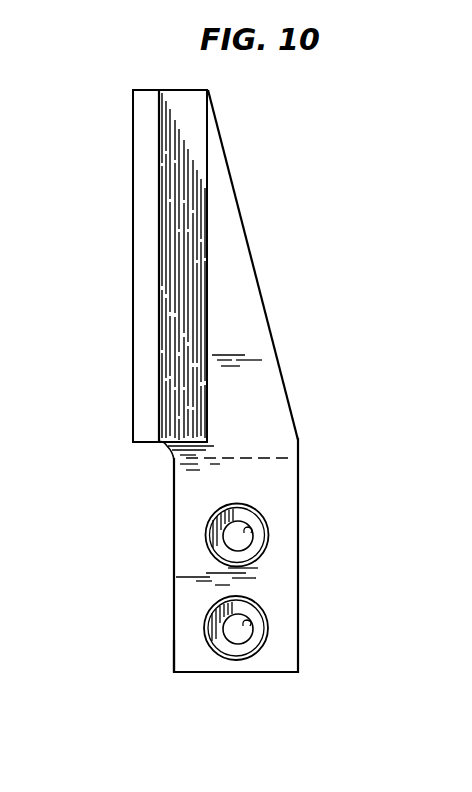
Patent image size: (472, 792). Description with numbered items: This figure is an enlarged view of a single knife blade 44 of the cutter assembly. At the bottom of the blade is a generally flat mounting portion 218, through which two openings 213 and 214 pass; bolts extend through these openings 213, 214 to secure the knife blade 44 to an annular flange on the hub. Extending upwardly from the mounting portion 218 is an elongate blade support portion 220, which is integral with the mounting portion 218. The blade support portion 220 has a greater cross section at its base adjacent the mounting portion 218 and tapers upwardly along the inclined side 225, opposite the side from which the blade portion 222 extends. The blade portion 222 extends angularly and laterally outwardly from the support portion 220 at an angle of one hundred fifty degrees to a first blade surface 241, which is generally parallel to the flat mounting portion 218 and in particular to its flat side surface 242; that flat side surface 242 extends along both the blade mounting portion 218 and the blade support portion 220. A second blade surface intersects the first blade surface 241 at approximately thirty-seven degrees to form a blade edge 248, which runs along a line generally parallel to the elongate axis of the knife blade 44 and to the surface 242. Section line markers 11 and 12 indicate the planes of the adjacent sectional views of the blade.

The section line 11- 11 is at (62, 70).
The section line 12- 12 is at (96, 57).
The knife blade 44 is at (368, 410).
The first blade surface 241 is at (142, 358).
The blade edge 248 is at (133, 288).
The inclined edge 225 is at (263, 311).
The blade support portion 220 is at (268, 394).
The blade portion 222 is at (160, 446).
The flat side surface 242 is at (258, 492).
The opening 214 is at (251, 535).
The opening 213 is at (250, 627).
The mounting portion 218 is at (193, 660).